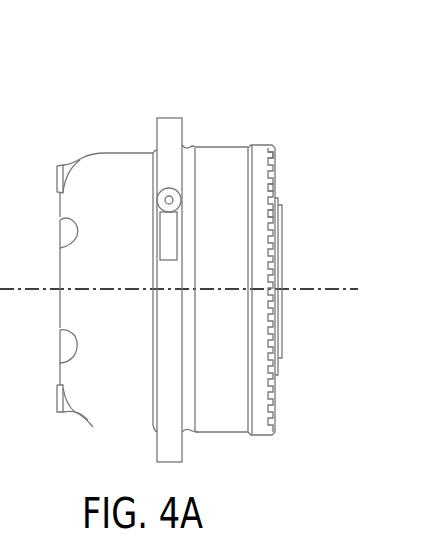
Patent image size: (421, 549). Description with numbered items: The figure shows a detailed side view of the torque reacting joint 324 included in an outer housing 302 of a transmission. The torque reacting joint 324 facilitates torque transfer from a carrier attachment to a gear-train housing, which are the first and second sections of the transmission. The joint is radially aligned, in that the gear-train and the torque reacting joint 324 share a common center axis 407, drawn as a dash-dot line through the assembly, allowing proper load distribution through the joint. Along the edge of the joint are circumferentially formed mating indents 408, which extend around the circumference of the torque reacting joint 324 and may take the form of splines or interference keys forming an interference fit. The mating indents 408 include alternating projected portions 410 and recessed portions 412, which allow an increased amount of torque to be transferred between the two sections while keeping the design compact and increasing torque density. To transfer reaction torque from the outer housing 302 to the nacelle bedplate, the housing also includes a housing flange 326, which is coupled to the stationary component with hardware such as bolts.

The outer housing 302 is at (197, 72).
The torque reacting joint 324 is at (268, 141).
The housing flange 326 is at (170, 133).
The center axis 407 is at (360, 288).
The mating indents 408 is at (269, 153).
The projected portions 410 is at (268, 190).
The recessed portions 412 is at (268, 215).